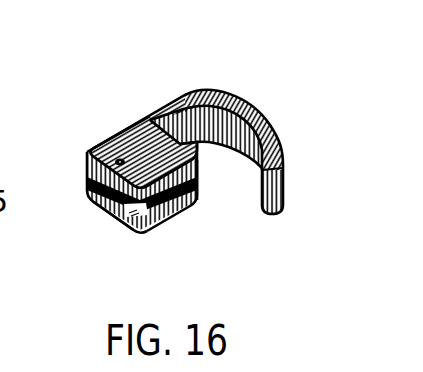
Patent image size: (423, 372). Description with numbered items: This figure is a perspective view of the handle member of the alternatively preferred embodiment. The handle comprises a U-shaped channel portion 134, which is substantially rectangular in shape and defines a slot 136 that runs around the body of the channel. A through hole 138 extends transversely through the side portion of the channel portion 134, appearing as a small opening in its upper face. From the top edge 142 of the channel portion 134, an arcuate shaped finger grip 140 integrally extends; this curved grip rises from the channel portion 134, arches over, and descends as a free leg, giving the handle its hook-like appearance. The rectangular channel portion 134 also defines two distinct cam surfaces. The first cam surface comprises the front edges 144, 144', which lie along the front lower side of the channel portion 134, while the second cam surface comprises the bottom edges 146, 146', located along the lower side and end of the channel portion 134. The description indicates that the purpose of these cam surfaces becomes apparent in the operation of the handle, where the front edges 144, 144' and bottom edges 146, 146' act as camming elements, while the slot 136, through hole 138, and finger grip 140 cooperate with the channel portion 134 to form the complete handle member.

The U-shaped channel portion 134 is at (155, 128).
The slot 136 is at (148, 228).
The through hole 138 is at (117, 160).
The arcuate shaped finger grip 140 is at (250, 106).
The top edge 142 is at (150, 128).
The front edge 144 is at (77, 204).
The front edge 144' is at (101, 243).
The bottom edge 146 is at (186, 215).
The bottom edge 146' is at (245, 208).